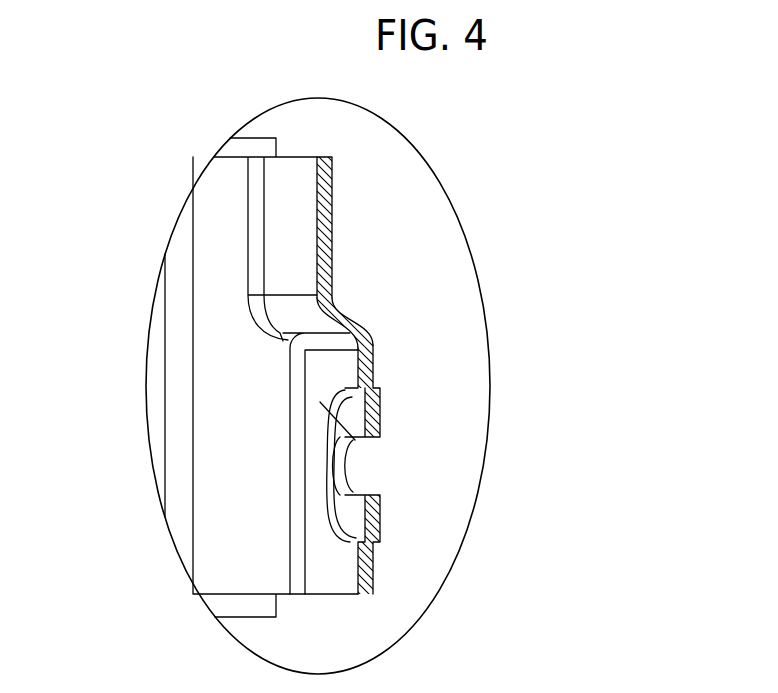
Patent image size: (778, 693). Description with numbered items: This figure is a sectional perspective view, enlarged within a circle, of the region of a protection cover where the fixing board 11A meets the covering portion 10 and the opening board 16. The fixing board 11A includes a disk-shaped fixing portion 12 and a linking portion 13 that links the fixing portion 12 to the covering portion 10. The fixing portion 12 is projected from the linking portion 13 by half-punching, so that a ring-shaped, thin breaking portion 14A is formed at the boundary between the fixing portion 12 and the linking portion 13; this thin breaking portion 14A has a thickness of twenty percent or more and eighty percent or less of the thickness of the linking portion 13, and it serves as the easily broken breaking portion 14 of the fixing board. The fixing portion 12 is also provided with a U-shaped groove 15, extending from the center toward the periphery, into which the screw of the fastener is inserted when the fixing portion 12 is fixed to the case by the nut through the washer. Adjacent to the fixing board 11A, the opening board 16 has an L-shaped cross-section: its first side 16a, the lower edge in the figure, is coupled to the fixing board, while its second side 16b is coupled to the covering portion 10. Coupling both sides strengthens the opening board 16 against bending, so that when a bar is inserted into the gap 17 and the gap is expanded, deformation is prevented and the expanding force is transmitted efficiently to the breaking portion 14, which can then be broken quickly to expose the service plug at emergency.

The covering portion 10 is at (213, 393).
The fixing board 11A is at (481, 466).
The fixing portion 12 is at (353, 423).
The linking portion 13 is at (363, 444).
The breaking portion 14 is at (463, 463).
The thin breaking portion 14A is at (386, 383).
The U-shaped groove 15 is at (385, 487).
The opening board 16 is at (473, 252).
The first side 16a is at (353, 317).
The second side 16b is at (332, 232).
The gap 17 is at (350, 200).